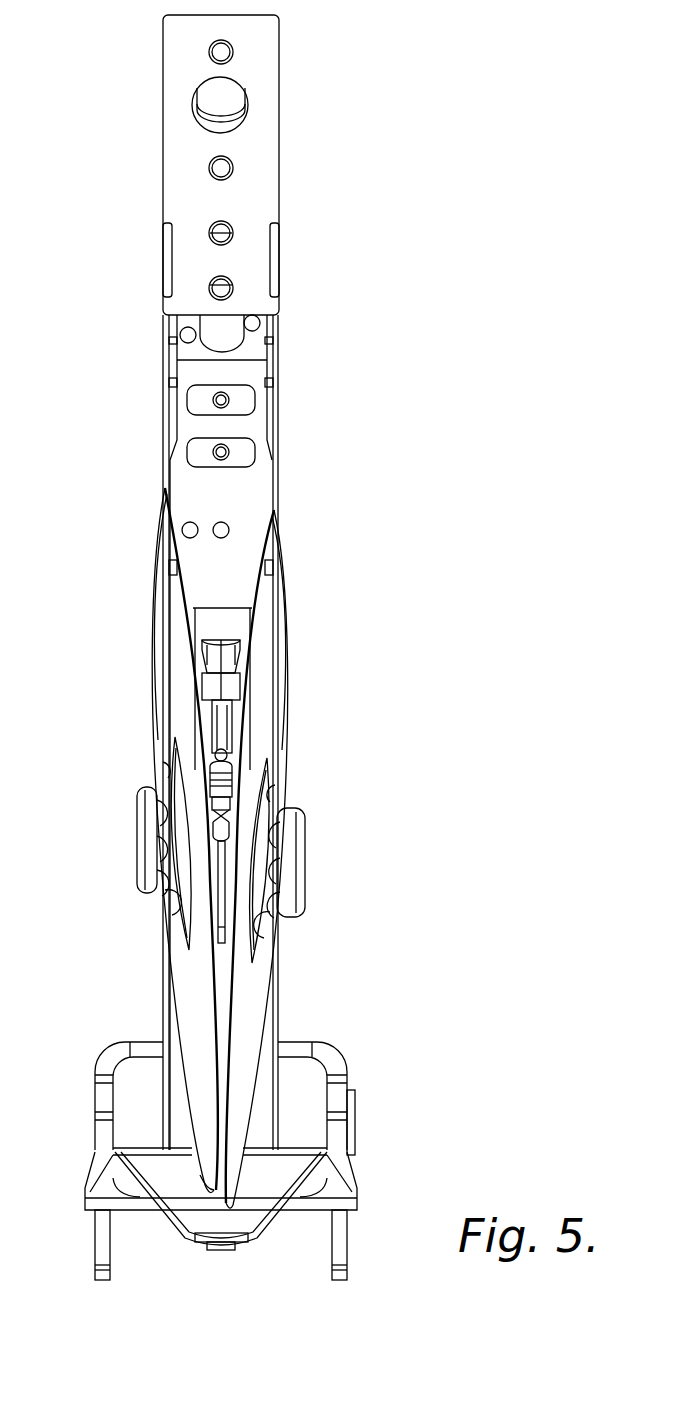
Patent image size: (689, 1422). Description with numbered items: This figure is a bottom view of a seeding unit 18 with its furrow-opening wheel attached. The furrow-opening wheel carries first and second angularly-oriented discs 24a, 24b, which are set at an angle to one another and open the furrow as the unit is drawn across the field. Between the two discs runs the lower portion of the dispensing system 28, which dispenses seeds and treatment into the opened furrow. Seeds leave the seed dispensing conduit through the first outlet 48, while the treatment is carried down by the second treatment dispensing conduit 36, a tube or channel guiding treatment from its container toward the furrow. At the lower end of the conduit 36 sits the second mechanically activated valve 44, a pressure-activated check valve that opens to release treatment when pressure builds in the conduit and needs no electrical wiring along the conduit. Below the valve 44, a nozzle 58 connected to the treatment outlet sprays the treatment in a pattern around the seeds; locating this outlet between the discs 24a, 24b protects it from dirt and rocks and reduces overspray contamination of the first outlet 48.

The seeding unit 18 is at (445, 383).
The dispensing system 28 is at (478, 710).
The first angularly-oriented disc 24a is at (280, 612).
The second angularly-oriented disc 24b is at (158, 600).
The first outlet 48 is at (225, 625).
The nozzle 58 is at (224, 752).
The second mechanically activated valve 44 is at (226, 800).
The second treatment dispensing conduit 36 is at (224, 868).